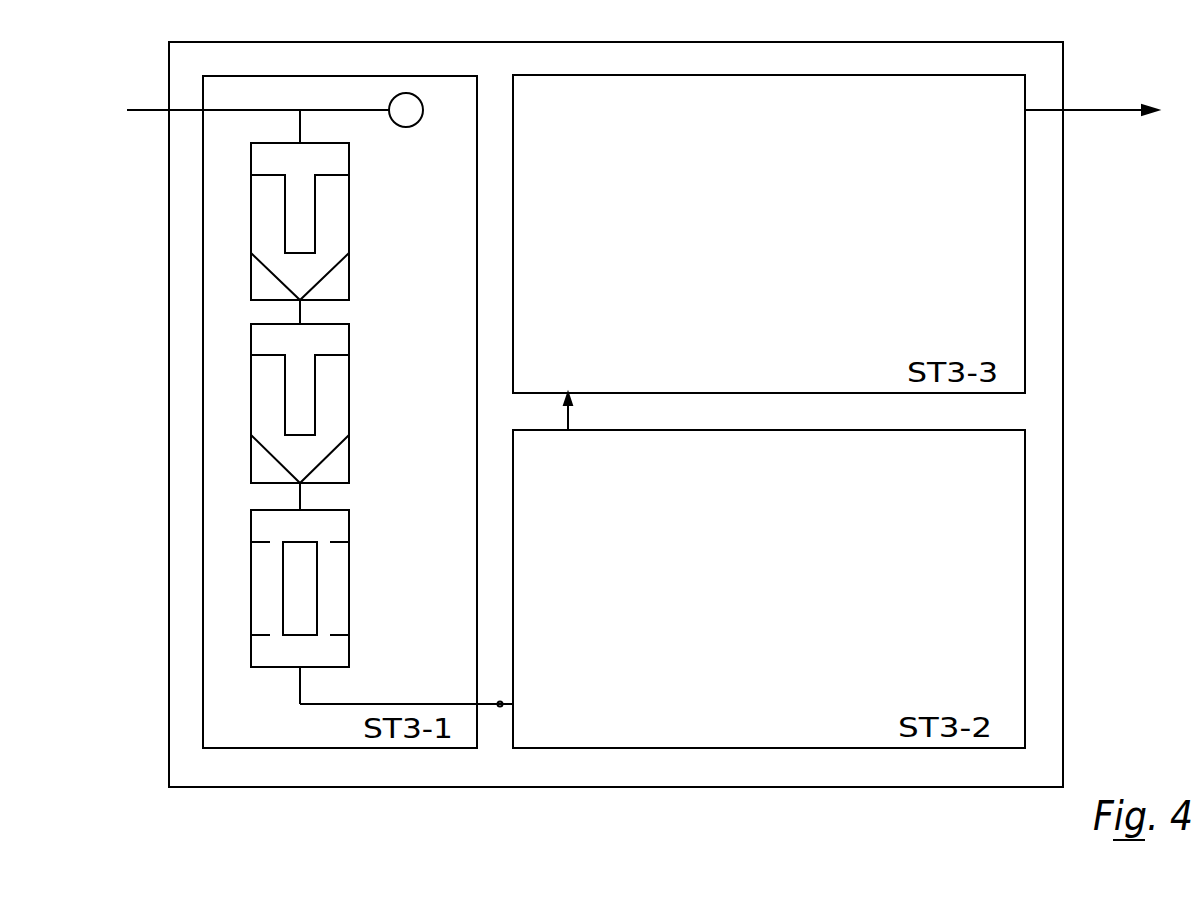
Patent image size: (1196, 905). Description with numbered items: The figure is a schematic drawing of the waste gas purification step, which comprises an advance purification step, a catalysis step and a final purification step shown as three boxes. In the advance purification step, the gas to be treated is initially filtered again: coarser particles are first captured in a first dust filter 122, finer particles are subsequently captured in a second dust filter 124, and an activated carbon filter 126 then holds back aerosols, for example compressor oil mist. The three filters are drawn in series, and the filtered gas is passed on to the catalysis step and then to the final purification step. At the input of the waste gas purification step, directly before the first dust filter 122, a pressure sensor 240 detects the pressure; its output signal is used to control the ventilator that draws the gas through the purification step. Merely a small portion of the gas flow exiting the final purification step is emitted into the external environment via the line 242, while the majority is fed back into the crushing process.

The first dust filter 122 is at (342, 212).
The second dust filter 124 is at (342, 395).
The activated carbon filter 126 is at (342, 594).
The pressure sensor 240 is at (410, 94).
The line 242 is at (1101, 89).